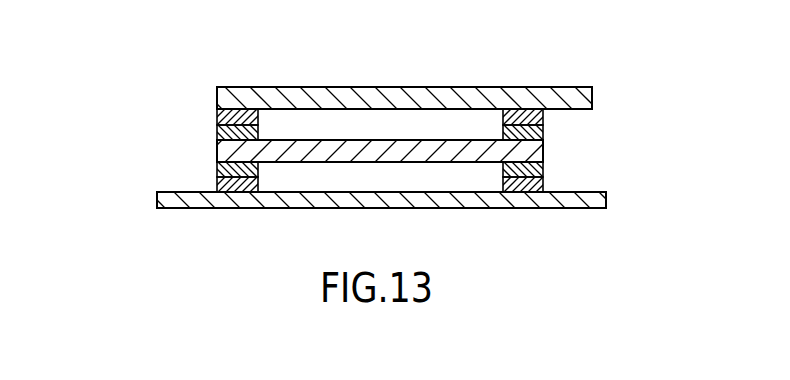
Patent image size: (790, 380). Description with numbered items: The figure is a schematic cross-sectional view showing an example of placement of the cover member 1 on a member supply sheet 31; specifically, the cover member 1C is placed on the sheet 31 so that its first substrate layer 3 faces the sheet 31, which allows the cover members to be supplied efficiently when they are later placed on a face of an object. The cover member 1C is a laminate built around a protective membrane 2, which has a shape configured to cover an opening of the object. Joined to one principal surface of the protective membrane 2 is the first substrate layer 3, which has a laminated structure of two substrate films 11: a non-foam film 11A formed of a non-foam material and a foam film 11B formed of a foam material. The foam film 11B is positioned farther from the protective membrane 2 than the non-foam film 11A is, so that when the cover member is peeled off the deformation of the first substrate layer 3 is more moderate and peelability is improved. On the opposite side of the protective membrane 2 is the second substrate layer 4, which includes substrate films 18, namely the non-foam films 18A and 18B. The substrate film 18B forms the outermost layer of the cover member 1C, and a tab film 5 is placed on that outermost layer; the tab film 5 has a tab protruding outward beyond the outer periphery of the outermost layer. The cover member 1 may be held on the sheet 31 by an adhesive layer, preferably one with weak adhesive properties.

The cover member 1 is at (359, 108).
The cover member 1C is at (359, 108).
The protective membrane 2 is at (533, 152).
The first substrate layer 3 is at (300, 165).
The second substrate layer 4 is at (300, 113).
The tab film 5 is at (408, 87).
The substrate film 11 is at (316, 165).
The non-foam film 11A is at (217, 168).
The foam film 11B is at (217, 186).
The substrate film 18 is at (316, 113).
The non-foam film 18A is at (217, 133).
The non-foam film 18B is at (217, 118).
The member supply sheet 31 is at (599, 196).